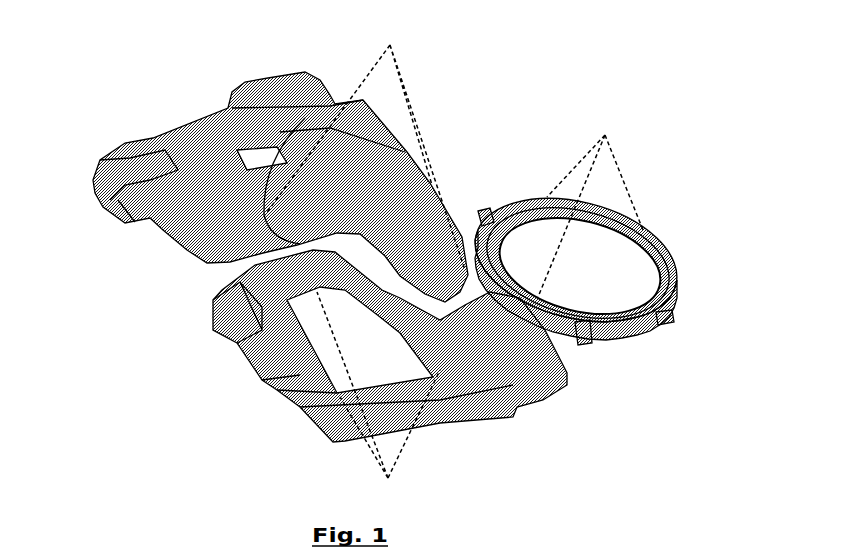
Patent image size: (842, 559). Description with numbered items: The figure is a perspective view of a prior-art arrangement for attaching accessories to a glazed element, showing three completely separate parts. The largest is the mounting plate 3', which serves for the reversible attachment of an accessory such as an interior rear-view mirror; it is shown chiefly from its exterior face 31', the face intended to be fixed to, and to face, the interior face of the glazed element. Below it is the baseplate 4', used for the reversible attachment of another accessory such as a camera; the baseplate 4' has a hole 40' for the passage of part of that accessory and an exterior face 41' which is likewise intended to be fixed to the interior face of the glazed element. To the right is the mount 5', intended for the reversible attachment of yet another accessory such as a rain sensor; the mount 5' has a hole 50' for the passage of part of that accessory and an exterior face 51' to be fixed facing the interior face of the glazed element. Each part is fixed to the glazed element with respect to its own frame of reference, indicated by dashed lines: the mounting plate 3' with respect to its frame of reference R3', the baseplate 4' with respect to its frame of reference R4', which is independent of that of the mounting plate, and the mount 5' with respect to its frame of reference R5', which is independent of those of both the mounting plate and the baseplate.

The mounting plate 3' is at (421, 229).
The exterior face 31' is at (334, 181).
The frame of reference R3' is at (373, 156).
The baseplate 4' is at (421, 255).
The hole 40' is at (400, 347).
The exterior face 41' is at (242, 341).
The frame of reference R4' is at (407, 396).
The mount 5' is at (421, 255).
The hole 50' is at (580, 265).
The exterior face 51' is at (602, 260).
The frame of reference R5' is at (628, 185).